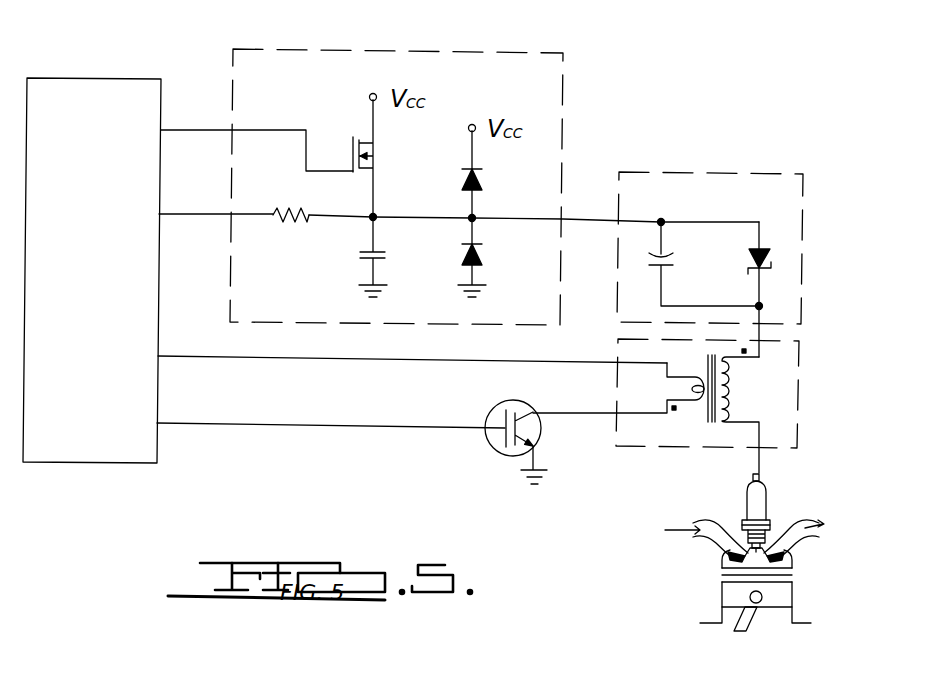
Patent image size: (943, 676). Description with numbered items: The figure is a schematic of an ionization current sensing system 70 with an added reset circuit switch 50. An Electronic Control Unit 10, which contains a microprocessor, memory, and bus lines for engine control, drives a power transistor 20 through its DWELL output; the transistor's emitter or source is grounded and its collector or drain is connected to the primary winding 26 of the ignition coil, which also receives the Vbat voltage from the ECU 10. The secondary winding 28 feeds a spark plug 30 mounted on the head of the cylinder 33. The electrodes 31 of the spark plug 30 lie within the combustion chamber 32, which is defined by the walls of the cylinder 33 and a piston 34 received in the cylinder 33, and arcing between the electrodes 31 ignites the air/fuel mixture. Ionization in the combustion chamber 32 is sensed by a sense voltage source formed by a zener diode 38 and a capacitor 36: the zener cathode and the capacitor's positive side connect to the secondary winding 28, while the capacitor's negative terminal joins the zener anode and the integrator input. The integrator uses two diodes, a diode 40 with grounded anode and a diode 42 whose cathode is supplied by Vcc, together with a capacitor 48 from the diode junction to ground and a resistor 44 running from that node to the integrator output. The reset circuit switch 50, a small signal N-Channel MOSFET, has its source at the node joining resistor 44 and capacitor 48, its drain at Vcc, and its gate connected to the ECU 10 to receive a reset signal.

The Electronic Control Unit (ECU) 10 is at (92, 358).
The power transistor 20 is at (493, 441).
The primary winding 26 is at (673, 380).
The secondary winding 28 is at (734, 391).
The spark plug 30 is at (765, 500).
The electrodes 31 is at (746, 563).
The combustion chamber 32 is at (784, 565).
The cylinder 33 is at (725, 605).
The piston 34 is at (783, 600).
The capacitor 36 is at (676, 259).
The zener diode 38 is at (770, 258).
The diode 40 is at (484, 260).
The diode 42 is at (482, 186).
The resistor 44 is at (275, 216).
The capacitor 48 is at (383, 260).
The reset circuit switch 50 is at (376, 148).
The ionization current sensing system 70 is at (706, 88).